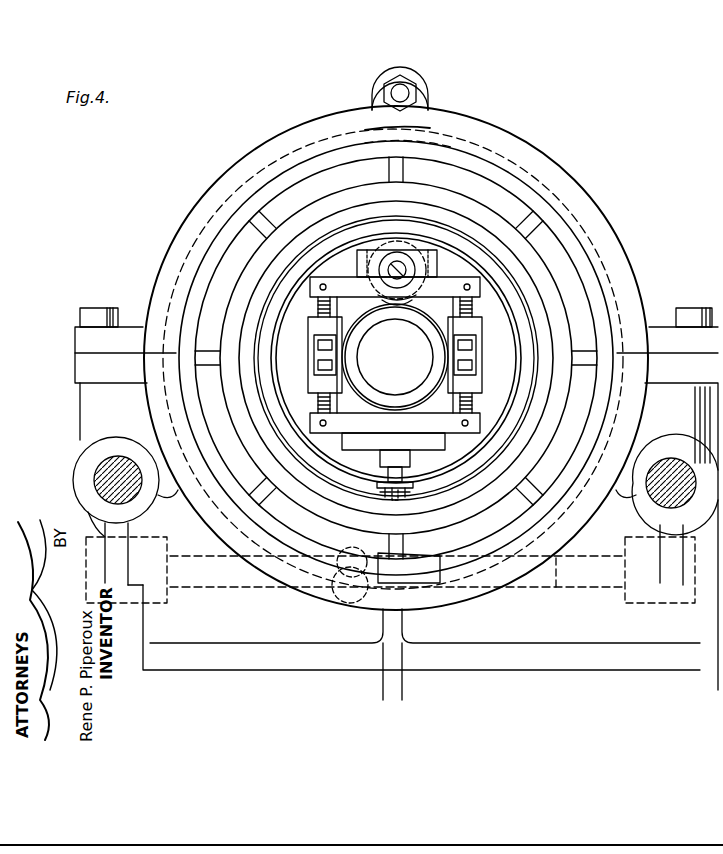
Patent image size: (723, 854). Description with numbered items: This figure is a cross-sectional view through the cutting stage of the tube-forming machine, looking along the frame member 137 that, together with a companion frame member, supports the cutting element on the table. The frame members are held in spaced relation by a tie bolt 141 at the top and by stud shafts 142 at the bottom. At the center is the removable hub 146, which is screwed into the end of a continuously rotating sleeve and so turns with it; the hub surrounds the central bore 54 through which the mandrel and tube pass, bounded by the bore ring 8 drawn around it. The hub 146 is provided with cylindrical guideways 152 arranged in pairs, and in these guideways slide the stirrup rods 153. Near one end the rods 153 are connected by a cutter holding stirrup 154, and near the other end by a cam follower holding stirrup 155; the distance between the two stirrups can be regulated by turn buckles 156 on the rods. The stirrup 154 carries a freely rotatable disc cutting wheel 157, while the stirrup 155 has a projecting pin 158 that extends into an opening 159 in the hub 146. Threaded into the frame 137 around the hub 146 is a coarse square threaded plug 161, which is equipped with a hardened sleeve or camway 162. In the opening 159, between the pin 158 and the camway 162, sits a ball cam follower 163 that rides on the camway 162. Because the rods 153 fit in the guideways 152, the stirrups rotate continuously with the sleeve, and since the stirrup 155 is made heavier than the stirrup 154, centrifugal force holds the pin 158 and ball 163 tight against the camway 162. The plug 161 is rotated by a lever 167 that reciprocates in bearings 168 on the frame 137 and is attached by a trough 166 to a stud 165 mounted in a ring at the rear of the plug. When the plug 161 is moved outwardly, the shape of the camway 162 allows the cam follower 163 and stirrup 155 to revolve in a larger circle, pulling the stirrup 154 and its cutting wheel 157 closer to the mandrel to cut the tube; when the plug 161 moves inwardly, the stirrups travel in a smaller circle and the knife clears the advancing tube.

The shaft bore ring 8 is at (350, 322).
The shaft bore 54 is at (432, 357).
The frame member 137 is at (519, 148).
The tie bolt 141 is at (407, 88).
The stud shafts 142 is at (98, 478).
The removable hub 146 is at (420, 225).
The cylindrical guideways 152 is at (338, 258).
The stirrup rods 153 is at (330, 305).
The cutter holding stirrup 154 is at (433, 283).
The cam follower holding stirrup 155 is at (428, 422).
The turn buckles 156 is at (482, 358).
The disc cutting wheel 157 is at (397, 300).
The projecting pin 158 is at (410, 458).
The opening 159 is at (410, 492).
The coarse square threaded plug 161 is at (272, 187).
The hardened sleeve or camway 162 is at (317, 233).
The ball cam follower 163 is at (392, 494).
The stud 165 is at (335, 588).
The trough 166 is at (378, 585).
The lever 167 is at (556, 590).
The bearings 168 is at (158, 540).